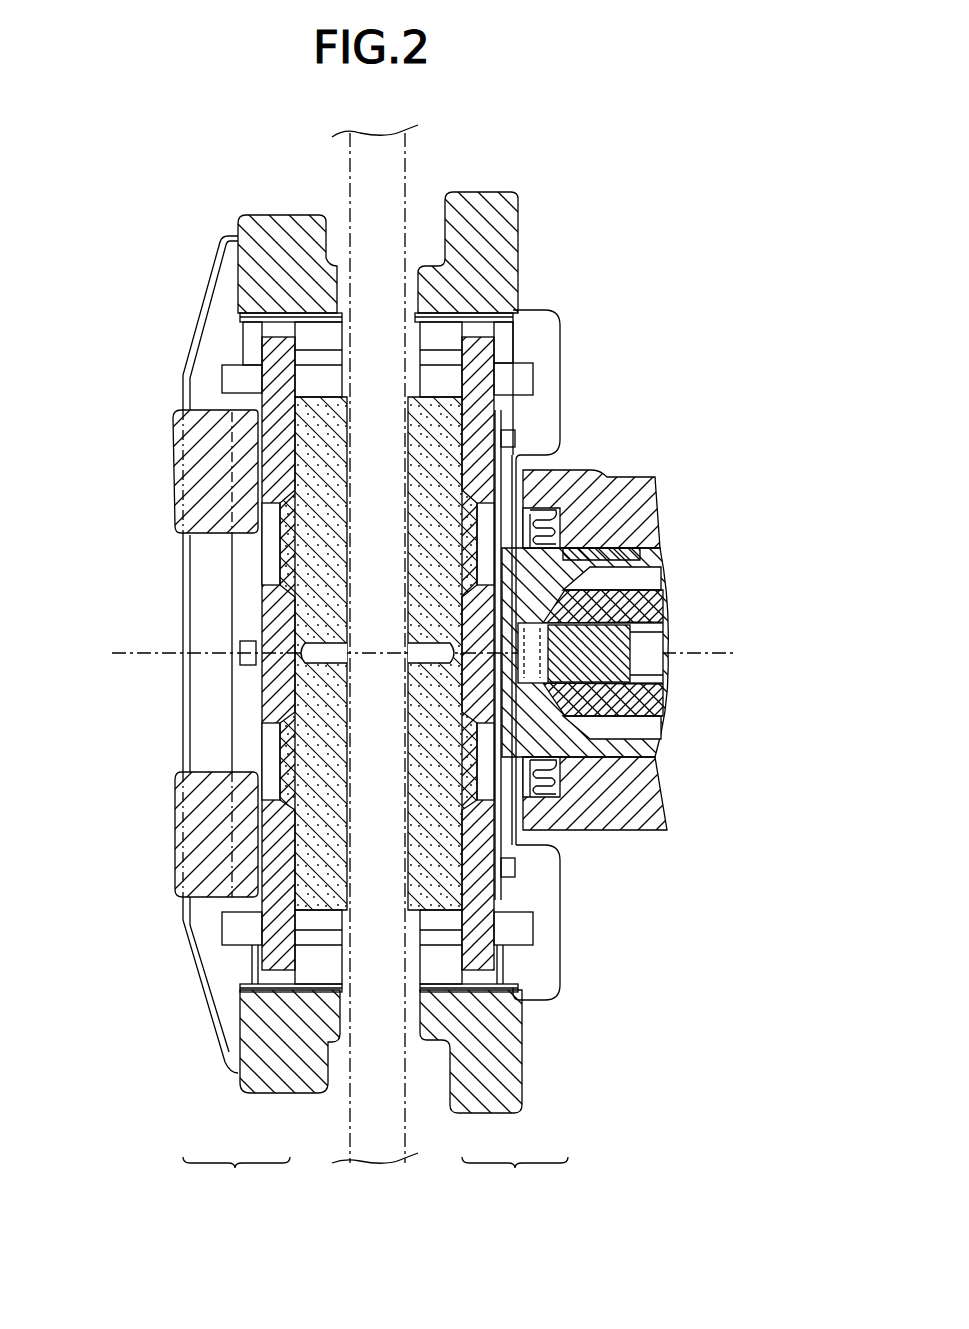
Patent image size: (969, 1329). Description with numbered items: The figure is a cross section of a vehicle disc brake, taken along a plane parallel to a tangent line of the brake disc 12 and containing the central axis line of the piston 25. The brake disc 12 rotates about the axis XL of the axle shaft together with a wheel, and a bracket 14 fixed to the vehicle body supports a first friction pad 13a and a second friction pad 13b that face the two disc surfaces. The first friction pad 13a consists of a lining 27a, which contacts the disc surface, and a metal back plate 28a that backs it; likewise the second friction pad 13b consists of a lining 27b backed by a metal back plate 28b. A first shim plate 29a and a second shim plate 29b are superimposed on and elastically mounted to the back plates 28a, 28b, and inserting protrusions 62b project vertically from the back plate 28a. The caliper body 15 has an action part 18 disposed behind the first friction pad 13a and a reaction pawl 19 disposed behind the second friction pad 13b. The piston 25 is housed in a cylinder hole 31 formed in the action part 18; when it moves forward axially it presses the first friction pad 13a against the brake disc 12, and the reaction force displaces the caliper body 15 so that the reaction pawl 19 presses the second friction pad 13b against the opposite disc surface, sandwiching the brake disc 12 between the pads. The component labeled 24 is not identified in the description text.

The brake disc 12 is at (350, 168).
The axis of the axle shaft XL is at (125, 653).
The first friction pad 13a is at (515, 1177).
The second friction pad 13b is at (236, 1177).
The bracket 14 is at (523, 1040).
The caliper body 15 is at (175, 465).
The action part 18 is at (640, 470).
The reaction pawl 19 is at (175, 866).
The hub 24 is at (682, 612).
The piston 25 is at (647, 549).
The lining 27a is at (452, 990).
The lining 27b is at (323, 913).
The metal back plate 28a is at (522, 1080).
The metal back plate 28b is at (277, 993).
The first shim plate 29a is at (500, 805).
The second shim plate 29b is at (255, 563).
The cylinder hole 31 is at (655, 748).
The inserting protrusions 62b is at (516, 438).